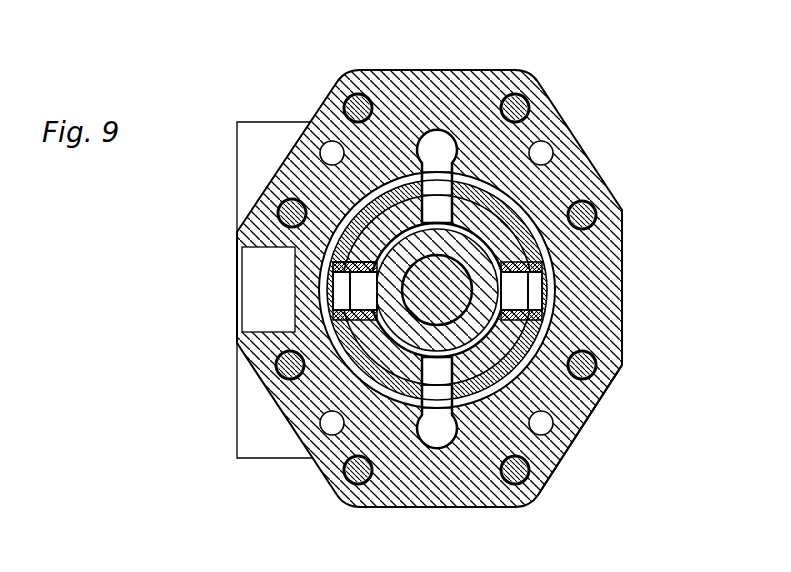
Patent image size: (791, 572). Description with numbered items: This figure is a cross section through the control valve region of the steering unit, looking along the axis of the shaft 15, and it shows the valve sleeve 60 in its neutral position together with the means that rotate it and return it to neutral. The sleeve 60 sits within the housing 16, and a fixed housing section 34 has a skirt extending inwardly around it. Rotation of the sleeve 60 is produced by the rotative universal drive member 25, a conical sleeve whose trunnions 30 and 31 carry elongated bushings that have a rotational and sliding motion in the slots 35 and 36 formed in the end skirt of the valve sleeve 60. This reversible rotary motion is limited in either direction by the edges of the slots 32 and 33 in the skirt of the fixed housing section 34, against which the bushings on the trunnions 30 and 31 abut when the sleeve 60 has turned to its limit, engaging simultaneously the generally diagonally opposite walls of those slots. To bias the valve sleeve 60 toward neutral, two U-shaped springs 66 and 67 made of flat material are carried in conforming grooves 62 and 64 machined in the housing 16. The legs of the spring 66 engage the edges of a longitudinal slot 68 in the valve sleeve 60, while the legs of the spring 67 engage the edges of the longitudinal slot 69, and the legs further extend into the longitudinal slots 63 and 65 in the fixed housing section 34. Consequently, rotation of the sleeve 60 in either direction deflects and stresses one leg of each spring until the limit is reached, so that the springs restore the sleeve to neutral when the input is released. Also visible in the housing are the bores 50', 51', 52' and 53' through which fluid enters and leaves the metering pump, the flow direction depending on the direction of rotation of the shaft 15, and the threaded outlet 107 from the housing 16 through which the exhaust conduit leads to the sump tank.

The shaft 15 is at (527, 505).
The housing 16 is at (320, 112).
The rotative universal drive member 25 is at (350, 290).
The trunnion 30 is at (343, 262).
The trunnion 31 is at (513, 284).
The slot 32 is at (340, 252).
The slot 33 is at (545, 307).
The housing section 34 is at (485, 205).
The slot 35 is at (345, 310).
The slot 36 is at (535, 280).
The bore 50' is at (249, 264).
The bore 51' is at (580, 450).
The bore 52' is at (423, 482).
The bore 53' is at (562, 98).
The valve sleeve 60 is at (382, 185).
The groove 62 is at (441, 300).
The longitudinal slot 63 is at (468, 395).
The groove 64 is at (437, 130).
The longitudinal slot 65 is at (465, 188).
The U-shaped spring 66 is at (437, 449).
The U-shaped spring 67 is at (422, 130).
The longitudinal slot 68 is at (417, 385).
The longitudinal slot 69 is at (400, 178).
The threaded outlet 107 is at (267, 303).